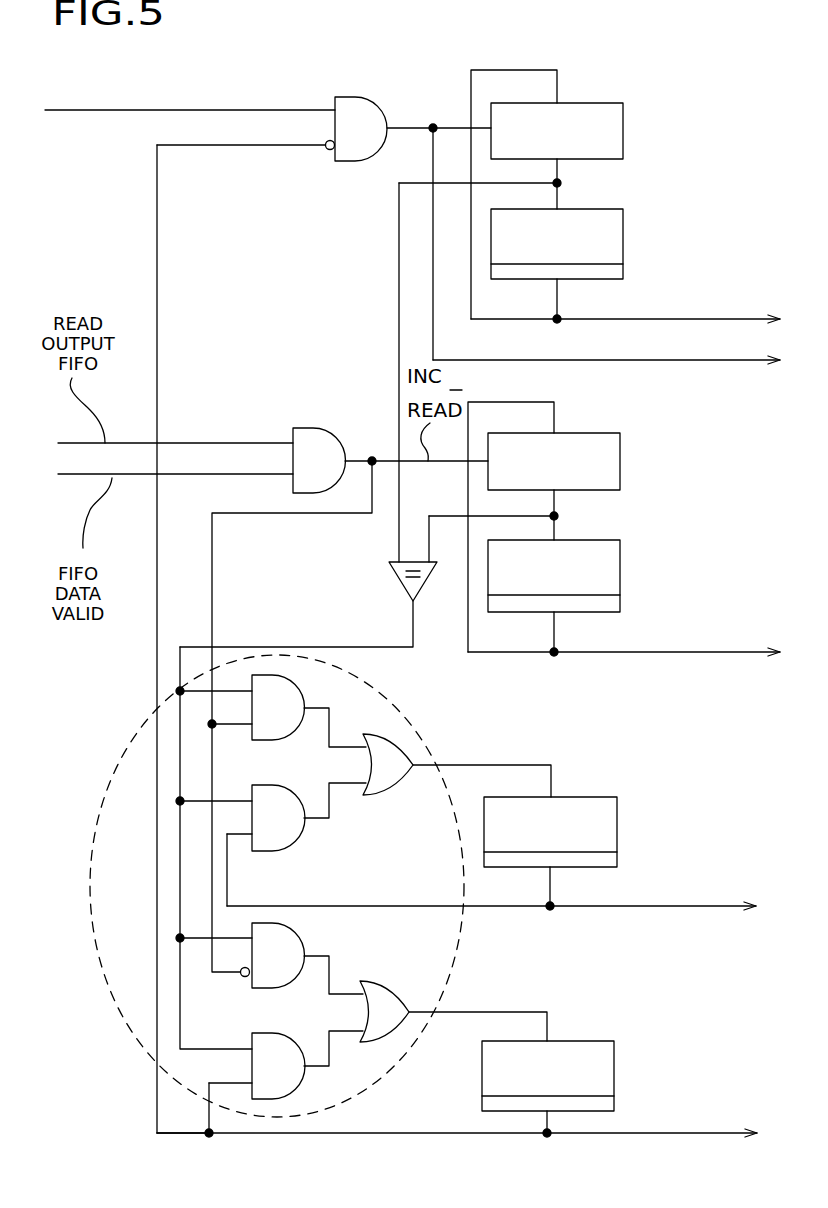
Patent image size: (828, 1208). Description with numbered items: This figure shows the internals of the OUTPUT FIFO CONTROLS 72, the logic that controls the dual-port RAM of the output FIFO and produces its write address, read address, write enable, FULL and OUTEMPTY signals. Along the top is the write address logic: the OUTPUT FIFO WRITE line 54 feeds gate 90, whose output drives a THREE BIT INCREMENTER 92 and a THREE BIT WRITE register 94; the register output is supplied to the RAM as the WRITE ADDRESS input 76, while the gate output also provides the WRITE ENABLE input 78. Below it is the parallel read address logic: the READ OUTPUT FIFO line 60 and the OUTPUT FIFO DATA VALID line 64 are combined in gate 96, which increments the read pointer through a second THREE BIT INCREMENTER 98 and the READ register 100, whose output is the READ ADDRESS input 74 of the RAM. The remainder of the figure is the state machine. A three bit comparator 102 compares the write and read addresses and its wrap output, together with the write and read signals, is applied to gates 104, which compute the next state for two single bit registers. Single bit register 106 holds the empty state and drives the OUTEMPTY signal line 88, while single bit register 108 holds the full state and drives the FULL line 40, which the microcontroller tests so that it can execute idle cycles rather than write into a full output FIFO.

The OUTPUT FIFO WRITE line 54 is at (128, 112).
The OUTPUT FIFO CONTROLS 72 is at (268, 253).
The gate 90 is at (350, 106).
The THREE BIT INCREMENTER 92 is at (611, 122).
The THREE BIT WRITE register 94 is at (611, 218).
The WRITE ADDRESS input 76 is at (586, 322).
The WRITE ENABLE input 78 is at (588, 362).
The READ OUTPUT FIFO line 60 is at (232, 443).
The OUTPUT FIFO DATA VALID line 64 is at (183, 476).
The gate 96 is at (313, 443).
The THREE BIT INCREMENTER 98 is at (608, 456).
The READ register 100 is at (608, 552).
The READ ADDRESS input 74 is at (595, 653).
The three bit comparator 102 is at (395, 563).
The gates 104 is at (420, 737).
The single bit register 106 is at (592, 825).
The OUTEMPTY signal line 88 is at (588, 908).
The single bit register 108 is at (604, 1068).
The FULL line 40 is at (585, 1135).